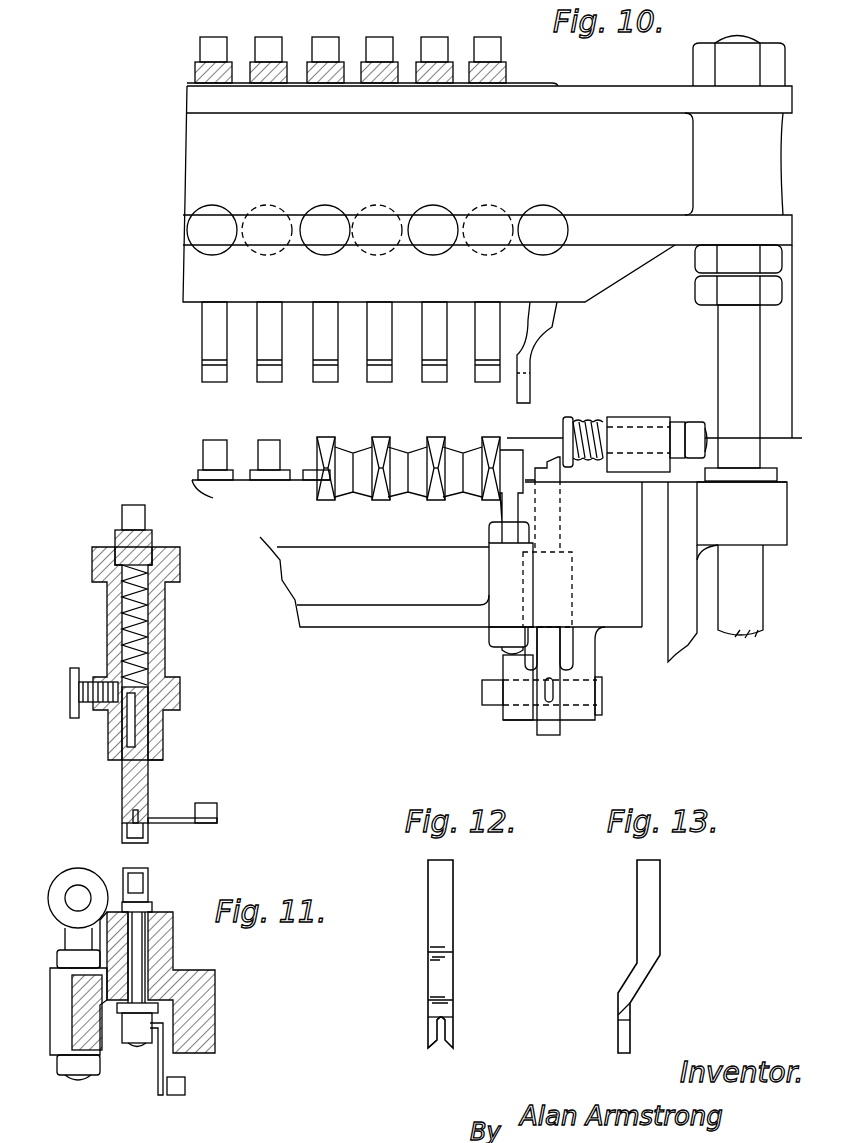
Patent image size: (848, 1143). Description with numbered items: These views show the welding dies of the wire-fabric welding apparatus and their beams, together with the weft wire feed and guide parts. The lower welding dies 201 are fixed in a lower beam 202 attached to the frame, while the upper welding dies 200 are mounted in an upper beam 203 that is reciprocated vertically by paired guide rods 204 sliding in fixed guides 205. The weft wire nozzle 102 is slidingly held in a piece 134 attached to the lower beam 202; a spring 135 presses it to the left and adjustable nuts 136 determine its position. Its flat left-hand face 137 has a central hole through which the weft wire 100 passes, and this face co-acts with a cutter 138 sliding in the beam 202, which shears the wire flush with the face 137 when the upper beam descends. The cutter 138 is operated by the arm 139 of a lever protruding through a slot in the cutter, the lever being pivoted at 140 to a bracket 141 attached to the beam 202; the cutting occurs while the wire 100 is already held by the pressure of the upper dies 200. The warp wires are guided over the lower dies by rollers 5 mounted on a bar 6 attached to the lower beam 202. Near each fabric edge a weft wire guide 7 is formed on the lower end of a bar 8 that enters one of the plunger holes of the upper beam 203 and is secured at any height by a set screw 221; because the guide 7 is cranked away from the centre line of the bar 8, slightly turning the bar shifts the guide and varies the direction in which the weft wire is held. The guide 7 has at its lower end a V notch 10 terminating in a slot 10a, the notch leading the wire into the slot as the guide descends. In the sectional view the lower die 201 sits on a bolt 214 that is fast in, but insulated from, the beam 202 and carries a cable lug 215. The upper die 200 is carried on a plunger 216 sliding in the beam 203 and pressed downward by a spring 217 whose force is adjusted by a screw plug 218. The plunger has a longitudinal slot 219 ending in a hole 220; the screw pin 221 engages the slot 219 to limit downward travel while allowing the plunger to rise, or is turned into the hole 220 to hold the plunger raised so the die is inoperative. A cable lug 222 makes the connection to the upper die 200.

In FIG. 10, the rollers 5 is at (437, 445).
In FIG. 11, the rollers 5 is at (63, 878).
In FIG. 10, the bar 6 is at (513, 460).
In FIG. 11, the bar 6 is at (78, 885).
In FIG. 10, the weft wire guide 7 is at (515, 382).
In FIG. 12, the weft wire guide 7 is at (430, 1017).
In FIG. 13, the weft wire guide 7 is at (627, 1008).
In FIG. 12, the bar 8 is at (448, 883).
In FIG. 13, the bar 8 is at (640, 882).
In FIG. 12, the V notch 10 is at (438, 1047).
In FIG. 12, the slot 10a is at (442, 1022).
In FIG. 13, the slot 10a is at (632, 1008).
In FIG. 10, the weft wire 100 is at (510, 438).
In FIG. 10, the weft wire nozzle 102 is at (572, 463).
In FIG. 10, the piece 134 is at (645, 422).
In FIG. 10, the spring 135 is at (587, 422).
In FIG. 10, the adjustable nuts 136 is at (688, 422).
In FIG. 10, the left-hand face 137 is at (565, 420).
In FIG. 10, the cutter 138 is at (555, 517).
In FIG. 10, the lever arm 139 is at (550, 697).
In FIG. 10, the pivot 140 is at (487, 688).
In FIG. 10, the bracket 141 is at (512, 717).
In FIG. 10, the upper welding die 200 is at (428, 367).
In FIG. 11, the upper welding die 200 is at (148, 833).
In FIG. 10, the lower welding die 201 is at (317, 447).
In FIG. 11, the lower welding die 201 is at (150, 873).
In FIG. 10, the lower beam 202 is at (489, 600).
In FIG. 11, the lower beam 202 is at (163, 950).
In FIG. 10, the upper beam 203 is at (487, 192).
In FIG. 11, the upper beam 203 is at (157, 620).
In FIG. 10, the guide rods 204 is at (732, 338).
In FIG. 10, the fixed guides 205 is at (742, 560).
In FIG. 11, the bolt 214 is at (138, 1045).
In FIG. 11, the cable lug 215 is at (187, 1080).
In FIG. 11, the plunger 216 is at (137, 802).
In FIG. 11, the spring 217 is at (120, 613).
In FIG. 10, the screw plug 218 is at (377, 43).
In FIG. 11, the screw plug 218 is at (127, 520).
In FIG. 11, the longitudinal slot 219 is at (128, 727).
In FIG. 11, the hole 220 is at (150, 760).
In FIG. 10, the screw pin 221 is at (425, 210).
In FIG. 11, the screw pin 221 is at (75, 670).
In FIG. 11, the cable lug 222 is at (218, 808).